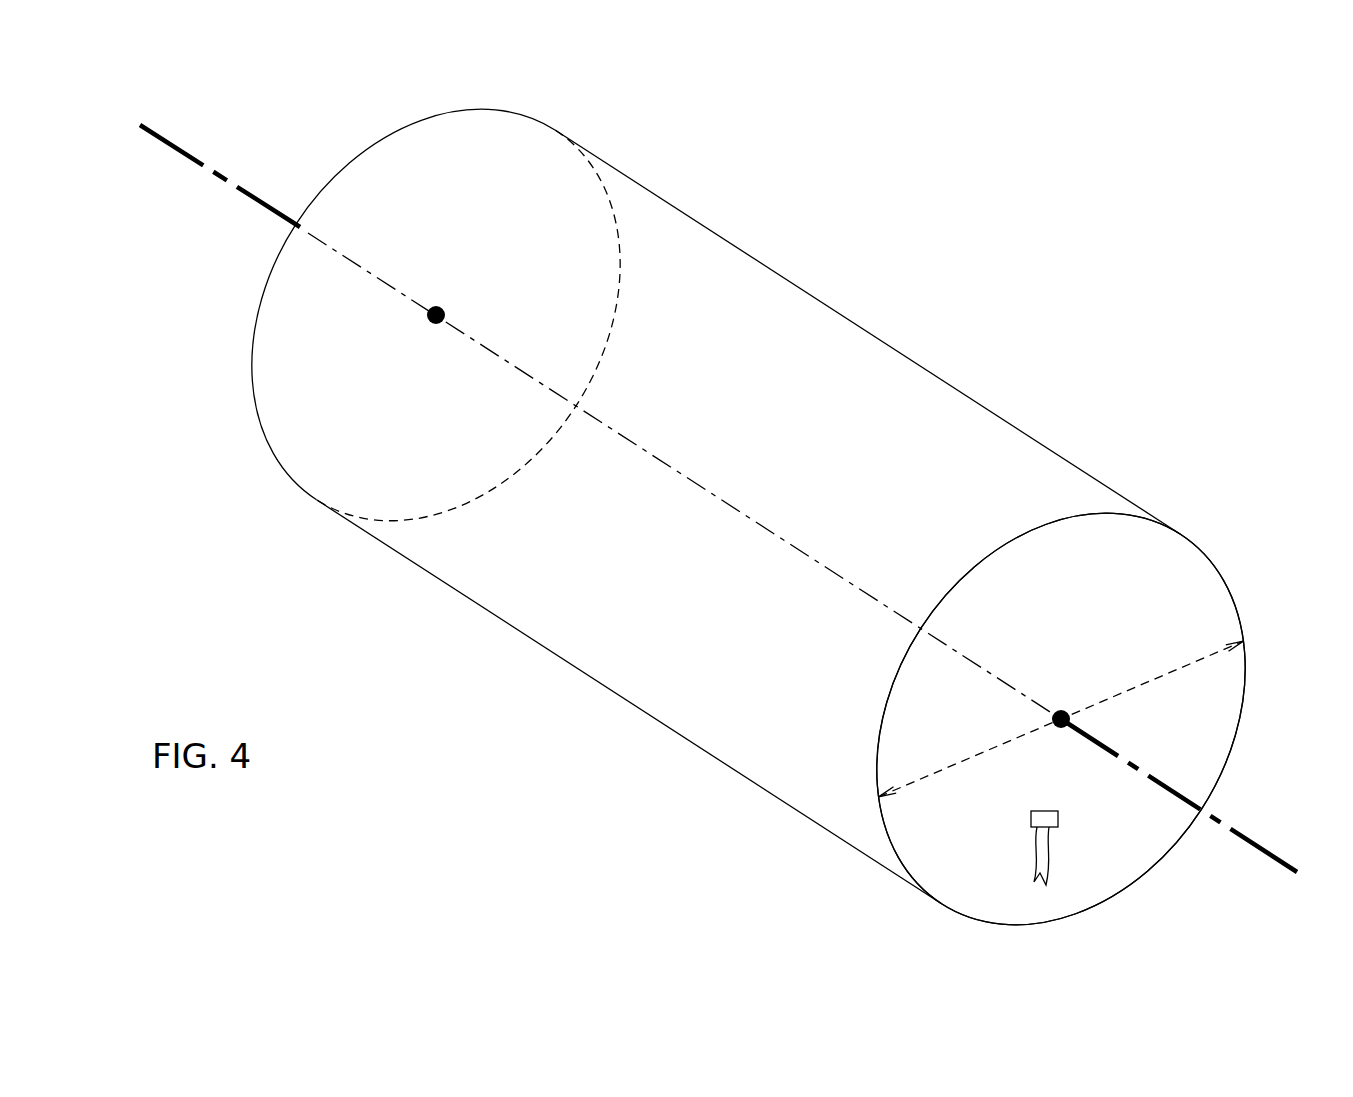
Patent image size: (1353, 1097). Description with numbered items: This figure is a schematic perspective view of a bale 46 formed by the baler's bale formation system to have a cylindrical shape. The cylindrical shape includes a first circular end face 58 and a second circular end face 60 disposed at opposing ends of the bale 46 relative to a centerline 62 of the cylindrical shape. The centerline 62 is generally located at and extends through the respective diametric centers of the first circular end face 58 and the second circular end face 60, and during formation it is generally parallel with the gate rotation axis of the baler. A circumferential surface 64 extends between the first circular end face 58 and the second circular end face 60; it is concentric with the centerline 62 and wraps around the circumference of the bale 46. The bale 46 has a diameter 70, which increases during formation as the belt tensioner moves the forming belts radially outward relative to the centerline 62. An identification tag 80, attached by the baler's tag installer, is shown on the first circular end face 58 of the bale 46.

The bale 46 is at (938, 277).
The first circular end face 58 is at (1195, 706).
The second circular end face 60 is at (416, 213).
The centerline 62 is at (1262, 843).
The circumferential surface 64 is at (1142, 873).
The diameter 70 is at (1152, 674).
The identification tag 80 is at (1031, 818).